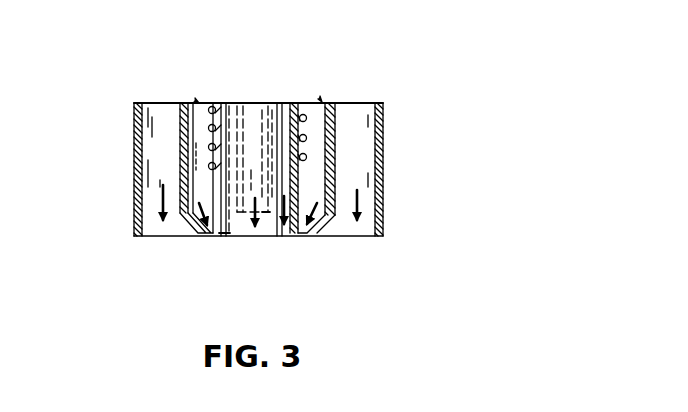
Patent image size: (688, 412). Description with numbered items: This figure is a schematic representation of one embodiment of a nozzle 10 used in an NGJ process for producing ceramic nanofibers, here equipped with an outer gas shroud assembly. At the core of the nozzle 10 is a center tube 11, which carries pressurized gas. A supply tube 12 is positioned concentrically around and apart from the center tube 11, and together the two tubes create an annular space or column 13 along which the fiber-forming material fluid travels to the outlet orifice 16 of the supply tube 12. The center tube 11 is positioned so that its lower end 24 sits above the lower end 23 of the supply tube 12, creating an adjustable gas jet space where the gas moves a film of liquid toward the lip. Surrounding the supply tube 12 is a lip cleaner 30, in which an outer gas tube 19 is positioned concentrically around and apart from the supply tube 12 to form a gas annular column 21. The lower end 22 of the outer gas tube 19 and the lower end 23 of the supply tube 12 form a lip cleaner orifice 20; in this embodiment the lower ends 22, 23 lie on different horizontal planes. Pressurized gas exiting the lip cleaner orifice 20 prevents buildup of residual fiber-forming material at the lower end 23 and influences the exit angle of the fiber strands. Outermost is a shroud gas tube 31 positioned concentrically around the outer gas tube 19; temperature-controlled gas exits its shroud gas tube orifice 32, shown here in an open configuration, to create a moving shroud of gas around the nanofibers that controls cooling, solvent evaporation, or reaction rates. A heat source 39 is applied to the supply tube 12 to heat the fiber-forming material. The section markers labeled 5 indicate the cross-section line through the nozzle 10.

The nozzle 10 is at (130, 115).
The center tube 11 is at (262, 103).
The supply tube 12 is at (296, 105).
The annular space or column 13 is at (227, 105).
The outlet orifice 16 is at (243, 238).
The outer gas tube 19 is at (306, 137).
The lip cleaner orifice 20 is at (308, 235).
The gas annular column 21 is at (195, 128).
The lower end of outer gas tube 22 is at (193, 236).
The lower end of supply tube 23 is at (225, 238).
The lower end of center tube 24 is at (264, 215).
The lip cleaner 30 is at (183, 203).
The shroud gas tube 31 is at (382, 124).
The shroud gas tube orifice 32 is at (357, 237).
The heat source 39 is at (324, 106).
The section line 5- 5 is at (132, 185).